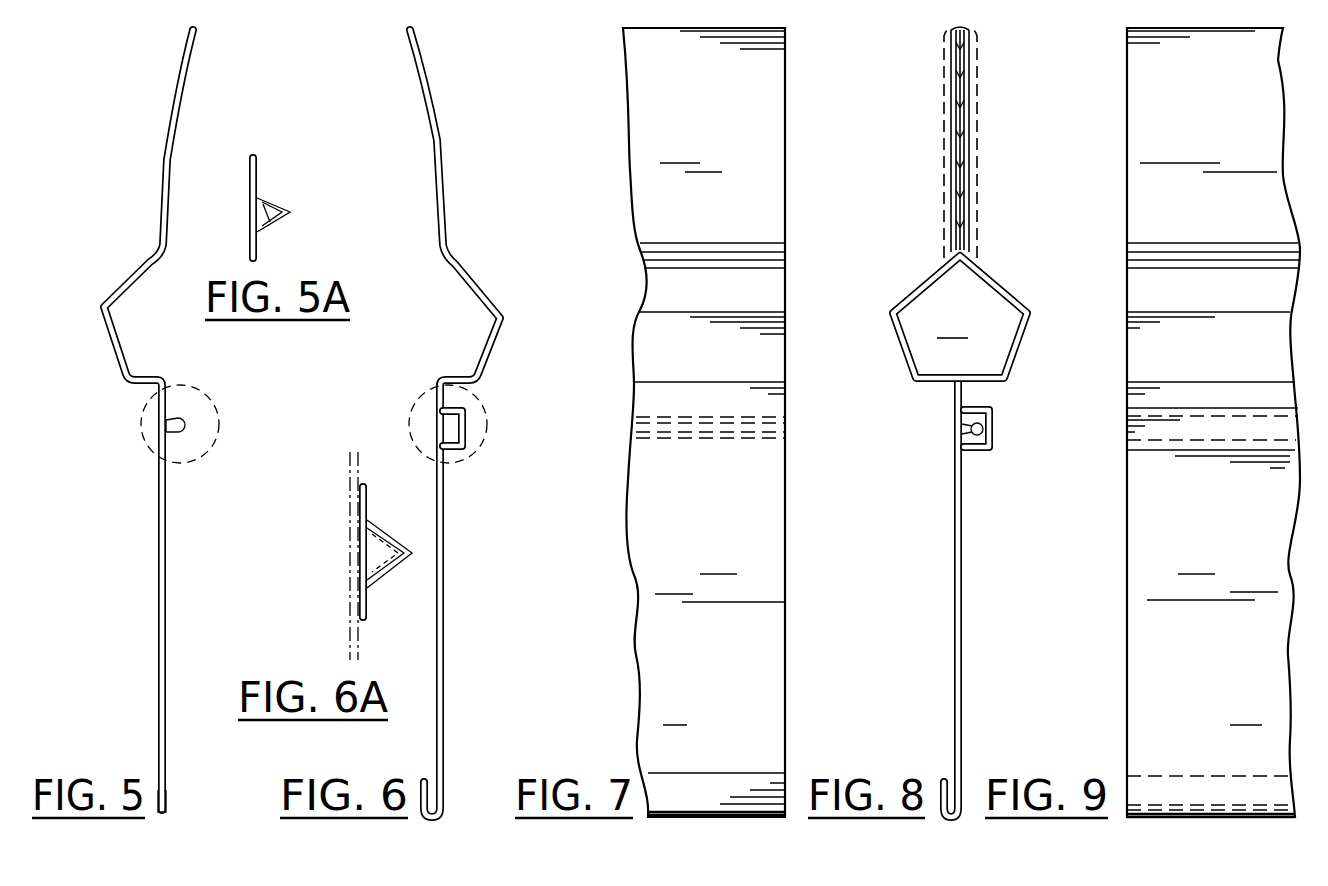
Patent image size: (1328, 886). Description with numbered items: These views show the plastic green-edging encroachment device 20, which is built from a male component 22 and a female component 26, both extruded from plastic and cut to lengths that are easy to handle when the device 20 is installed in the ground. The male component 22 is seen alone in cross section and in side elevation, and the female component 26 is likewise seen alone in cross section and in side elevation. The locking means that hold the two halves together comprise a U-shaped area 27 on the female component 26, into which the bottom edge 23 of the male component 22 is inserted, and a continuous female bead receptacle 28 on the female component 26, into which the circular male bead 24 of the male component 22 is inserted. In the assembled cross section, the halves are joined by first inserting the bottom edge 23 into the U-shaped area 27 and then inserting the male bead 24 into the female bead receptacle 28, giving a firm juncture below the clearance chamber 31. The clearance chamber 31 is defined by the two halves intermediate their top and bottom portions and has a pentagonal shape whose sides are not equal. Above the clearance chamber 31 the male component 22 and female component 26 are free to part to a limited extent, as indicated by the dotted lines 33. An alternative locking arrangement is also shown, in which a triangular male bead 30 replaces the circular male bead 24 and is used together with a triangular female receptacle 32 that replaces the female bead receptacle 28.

In FIG. 7, the encroachment device 20 is at (775, 186).
In FIG. 8, the encroachment device 20 is at (970, 182).
In FIG. 9, the encroachment device 20 is at (1142, 184).
In FIG. 5, the male component 22 is at (158, 563).
In FIG. 7, the male component 22 is at (710, 616).
In FIG. 5, the bottom edge 23 is at (166, 797).
In FIG. 5, the male bead 24 is at (184, 426).
In FIG. 6, the female component 26 is at (446, 570).
In FIG. 9, the female component 26 is at (1212, 612).
In FIG. 6, the U-shaped area 27 is at (432, 787).
In FIG. 6, the continuous female bead receptacle 28 is at (455, 433).
In FIG. 8, the continuous female bead receptacle 28 is at (975, 428).
In FIG. 5A, the triangular male bead 30 is at (283, 208).
In FIG. 6A, the triangular male bead 30 is at (390, 556).
In FIG. 8, the clearance chamber 31 is at (960, 317).
In FIG. 6A, the triangular female receptacle 32 is at (385, 575).
In FIG. 8, the dotted lines 33 is at (944, 78).